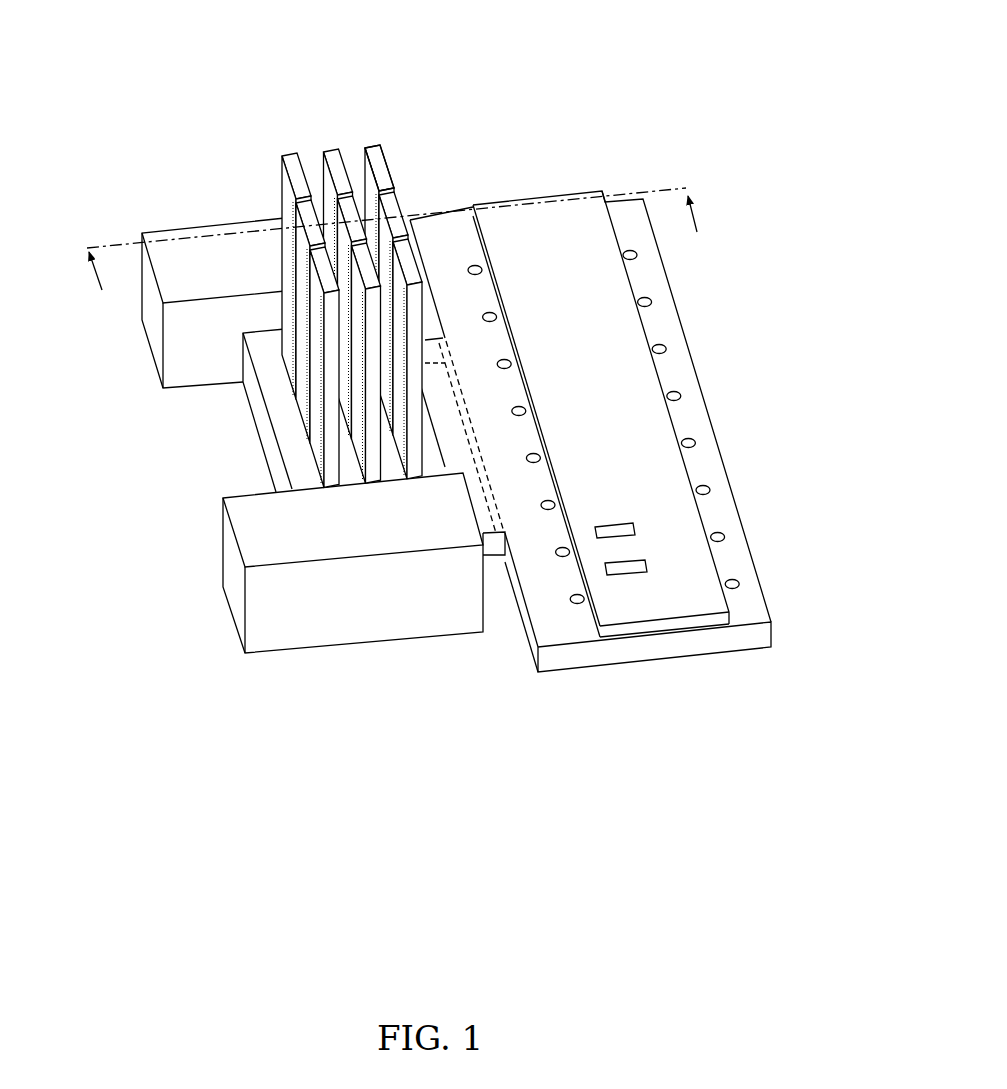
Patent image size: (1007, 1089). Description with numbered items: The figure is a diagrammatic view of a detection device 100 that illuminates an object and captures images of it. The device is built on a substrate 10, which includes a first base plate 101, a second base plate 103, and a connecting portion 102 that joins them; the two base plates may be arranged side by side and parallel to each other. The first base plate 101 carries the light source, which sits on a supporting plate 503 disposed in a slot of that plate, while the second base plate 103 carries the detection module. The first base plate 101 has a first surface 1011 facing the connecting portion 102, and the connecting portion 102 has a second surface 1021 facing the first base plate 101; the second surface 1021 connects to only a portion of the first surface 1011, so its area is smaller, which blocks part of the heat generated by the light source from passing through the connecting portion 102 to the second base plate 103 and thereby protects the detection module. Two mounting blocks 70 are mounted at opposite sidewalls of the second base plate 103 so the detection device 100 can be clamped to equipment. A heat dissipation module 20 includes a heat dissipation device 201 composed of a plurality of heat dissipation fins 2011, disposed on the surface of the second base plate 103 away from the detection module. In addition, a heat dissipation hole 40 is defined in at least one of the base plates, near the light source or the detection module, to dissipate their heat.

The detection device 100 is at (407, 48).
The substrate 10 is at (497, 454).
The first base plate 101 is at (520, 580).
The first surface 1011 is at (520, 612).
The connecting portion 102 is at (445, 408).
The second surface 1021 is at (449, 347).
The second base plate 103 is at (290, 435).
The heat dissipation module 20 is at (340, 276).
The heat dissipation device 201 is at (328, 151).
The heat dissipation fins 2011 is at (376, 162).
The heat dissipation hole 40 is at (652, 300).
The supporting plate 503 is at (668, 483).
The mounting blocks 70 is at (177, 357).